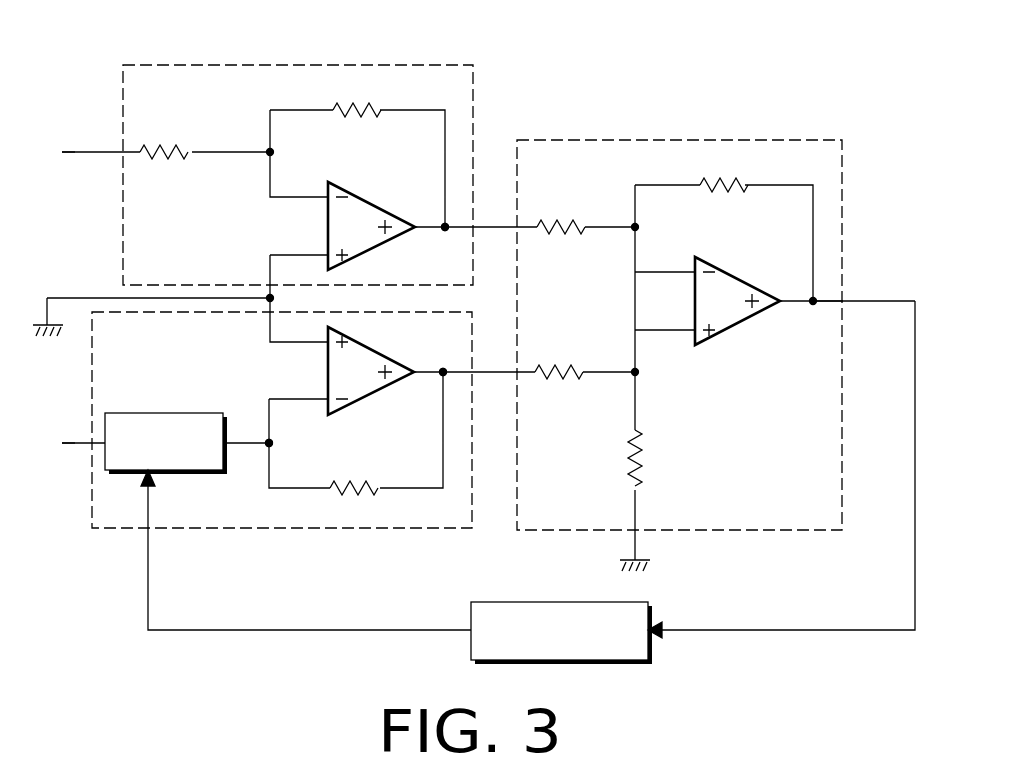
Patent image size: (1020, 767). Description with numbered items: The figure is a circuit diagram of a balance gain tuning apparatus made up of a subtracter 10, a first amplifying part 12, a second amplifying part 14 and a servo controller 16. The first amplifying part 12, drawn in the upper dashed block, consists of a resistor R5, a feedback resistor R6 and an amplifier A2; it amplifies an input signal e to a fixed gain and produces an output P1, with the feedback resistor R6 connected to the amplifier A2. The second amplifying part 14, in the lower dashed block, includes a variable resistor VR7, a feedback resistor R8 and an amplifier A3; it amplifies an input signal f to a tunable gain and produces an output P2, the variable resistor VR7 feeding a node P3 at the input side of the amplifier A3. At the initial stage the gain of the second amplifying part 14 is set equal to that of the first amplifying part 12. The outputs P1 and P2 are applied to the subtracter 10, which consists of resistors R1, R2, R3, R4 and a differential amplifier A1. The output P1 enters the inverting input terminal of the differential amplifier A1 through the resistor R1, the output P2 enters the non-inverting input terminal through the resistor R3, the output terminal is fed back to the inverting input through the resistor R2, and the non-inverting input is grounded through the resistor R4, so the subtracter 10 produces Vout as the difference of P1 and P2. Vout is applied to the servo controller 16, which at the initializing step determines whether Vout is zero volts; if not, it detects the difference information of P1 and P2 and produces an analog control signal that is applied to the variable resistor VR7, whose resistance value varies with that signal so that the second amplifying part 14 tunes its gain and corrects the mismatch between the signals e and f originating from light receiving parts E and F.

The subtracter 10 is at (665, 138).
The first amplifying part 12 is at (283, 64).
The second amplifying part 14 is at (284, 530).
The servo controller 16 is at (559, 602).
The resistor R1 is at (561, 211).
The resistor R2 is at (724, 170).
The resistor R3 is at (559, 389).
The resistor R4 is at (655, 458).
The resistor R5 is at (164, 137).
The feedback resistor R6 is at (357, 95).
The feedback resistor R8 is at (354, 505).
The variable resistor VR7 is at (165, 410).
The differential amplifier A1 is at (735, 325).
The amplifier A2 is at (365, 254).
The amplifier A3 is at (365, 397).
The output P1 is at (446, 244).
The output P2 is at (444, 357).
The node P3 is at (289, 444).
The input signal e is at (57, 152).
The input signal f is at (58, 443).
The output Vout is at (861, 287).